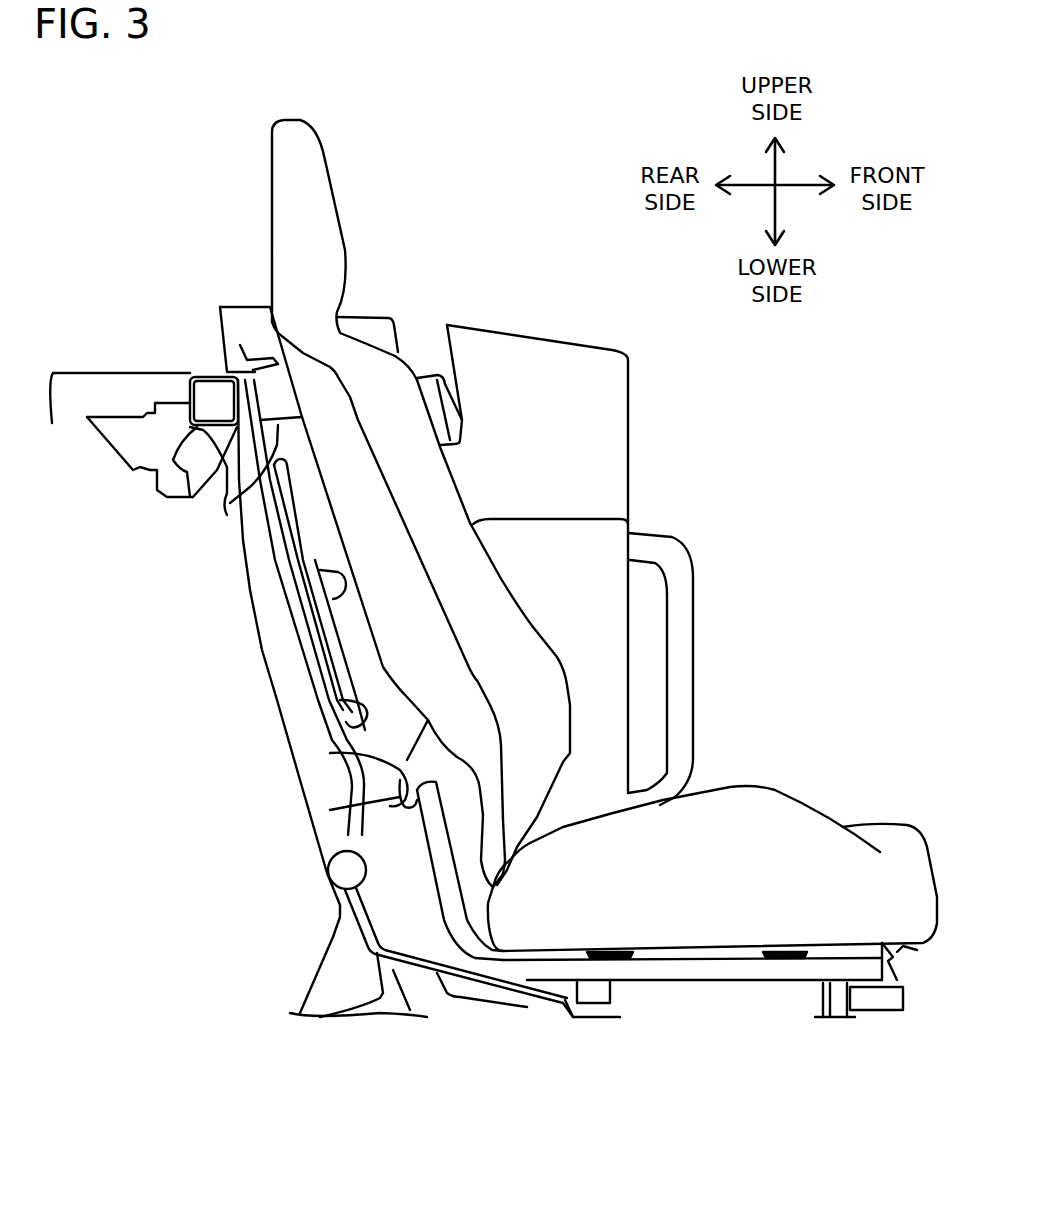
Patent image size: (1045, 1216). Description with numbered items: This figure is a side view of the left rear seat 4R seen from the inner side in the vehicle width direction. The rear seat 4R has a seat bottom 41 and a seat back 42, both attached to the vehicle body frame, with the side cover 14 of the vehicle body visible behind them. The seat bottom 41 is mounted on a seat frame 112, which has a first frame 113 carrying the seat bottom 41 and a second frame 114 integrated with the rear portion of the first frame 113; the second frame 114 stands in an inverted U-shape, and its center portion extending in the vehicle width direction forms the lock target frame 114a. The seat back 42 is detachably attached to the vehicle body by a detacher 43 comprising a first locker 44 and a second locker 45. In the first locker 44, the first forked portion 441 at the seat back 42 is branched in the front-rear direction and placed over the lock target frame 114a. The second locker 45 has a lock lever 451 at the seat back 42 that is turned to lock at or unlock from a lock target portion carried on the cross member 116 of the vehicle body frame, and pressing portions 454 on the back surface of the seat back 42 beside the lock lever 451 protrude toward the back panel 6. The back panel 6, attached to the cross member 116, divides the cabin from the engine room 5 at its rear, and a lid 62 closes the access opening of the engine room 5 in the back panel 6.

The rear seat 4R is at (290, 116).
The seat back 42 is at (373, 367).
The side cover 14 is at (553, 337).
The seat bottom 41 is at (807, 867).
The seat frame 112 is at (603, 940).
The first frame 113 is at (717, 970).
The second frame 114 is at (440, 857).
The lock target frame 114a is at (378, 783).
The detacher 43 is at (266, 498).
The second locker 45 is at (208, 297).
The lock lever 451 is at (262, 367).
The first locker 44 is at (407, 793).
The first forked portion 441 is at (443, 810).
The engine room 5 is at (186, 675).
The back panel 6 is at (350, 720).
The lid 62 is at (320, 574).
The cross member 116 is at (203, 377).
The pressing portion 454 is at (230, 503).